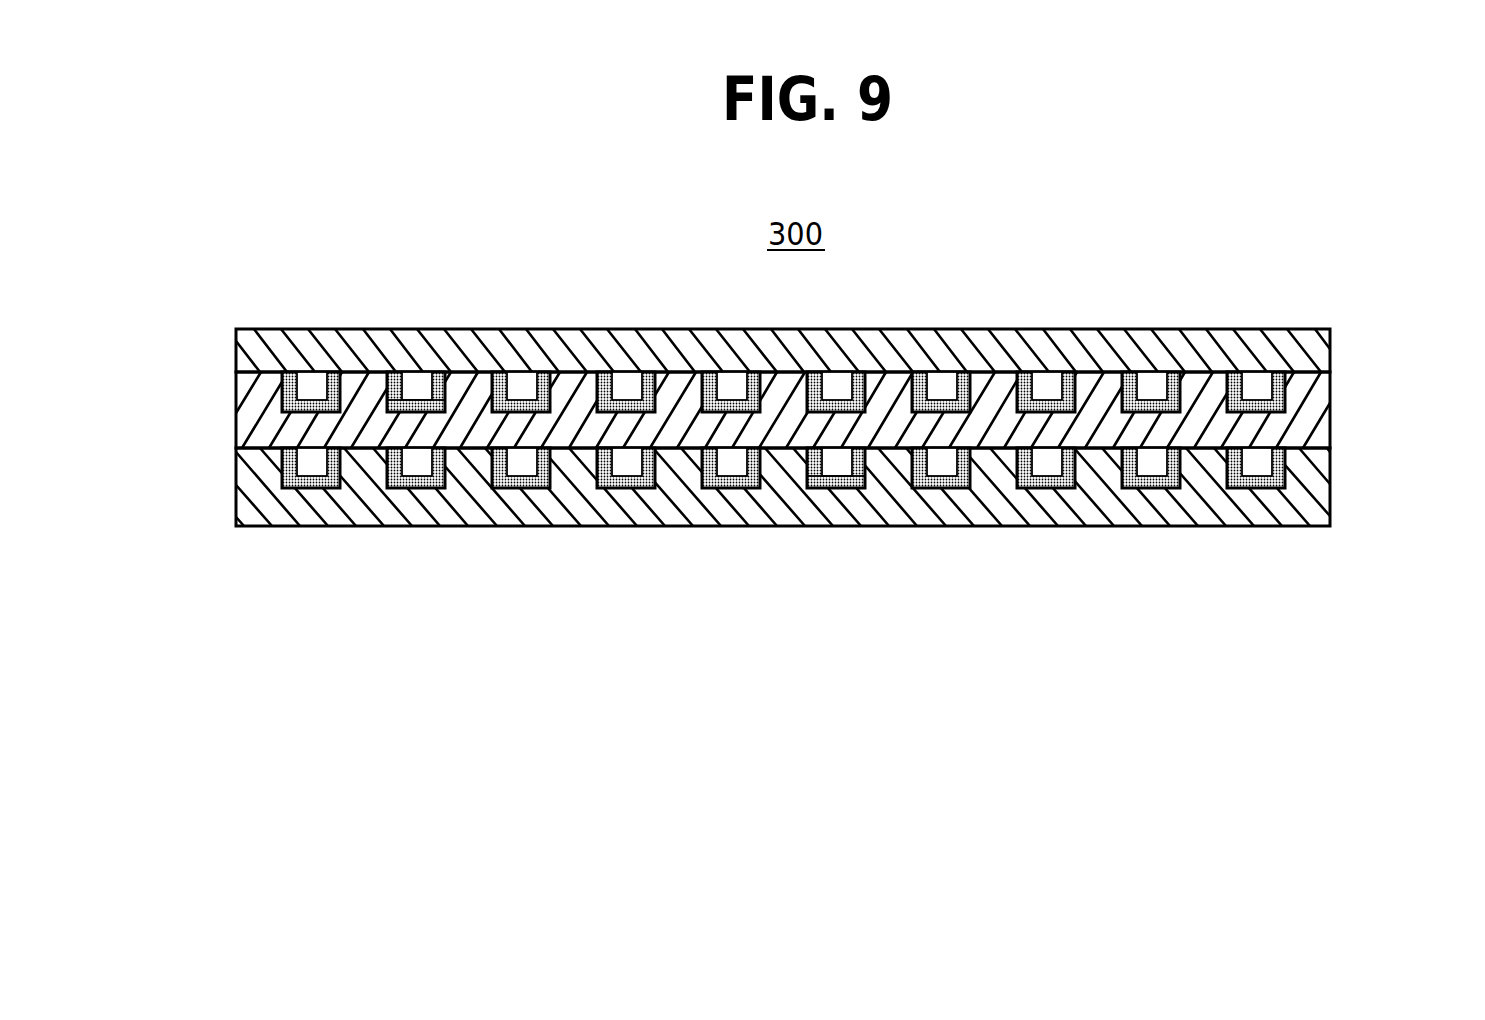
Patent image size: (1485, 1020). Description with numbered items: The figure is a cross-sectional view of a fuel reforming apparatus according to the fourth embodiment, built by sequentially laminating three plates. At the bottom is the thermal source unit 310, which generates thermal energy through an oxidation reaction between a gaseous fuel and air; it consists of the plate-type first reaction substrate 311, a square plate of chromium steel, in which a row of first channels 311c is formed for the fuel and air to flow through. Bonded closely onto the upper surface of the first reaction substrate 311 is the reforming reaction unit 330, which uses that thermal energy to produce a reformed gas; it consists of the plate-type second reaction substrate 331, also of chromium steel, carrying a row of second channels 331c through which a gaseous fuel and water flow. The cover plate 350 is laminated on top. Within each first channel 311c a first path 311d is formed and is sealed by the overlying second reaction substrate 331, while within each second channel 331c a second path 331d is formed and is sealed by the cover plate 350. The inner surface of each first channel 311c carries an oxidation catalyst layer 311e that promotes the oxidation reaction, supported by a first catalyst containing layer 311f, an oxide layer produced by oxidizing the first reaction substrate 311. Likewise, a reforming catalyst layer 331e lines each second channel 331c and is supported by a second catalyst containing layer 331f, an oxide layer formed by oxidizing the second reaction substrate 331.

The cover plate 350 is at (233, 357).
The reforming reaction unit 330 is at (1357, 400).
The second reaction substrate 331 is at (233, 410).
The thermal source unit 310 is at (1357, 481).
The first reaction substrate 311 is at (233, 490).
The reforming catalyst layer 331e is at (386, 397).
The second catalyst containing layer 331f is at (408, 391).
The second channel 331c is at (522, 416).
The second path 331d is at (1151, 415).
The oxidation catalyst layer 311e is at (808, 457).
The first catalyst containing layer 311f is at (850, 478).
The first channel 311c is at (945, 466).
The first path 311d is at (1047, 490).